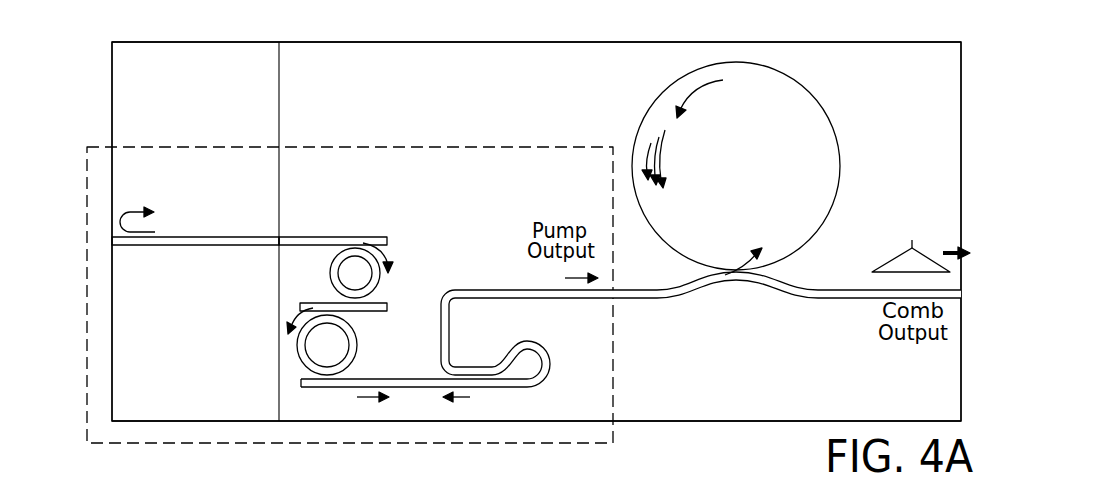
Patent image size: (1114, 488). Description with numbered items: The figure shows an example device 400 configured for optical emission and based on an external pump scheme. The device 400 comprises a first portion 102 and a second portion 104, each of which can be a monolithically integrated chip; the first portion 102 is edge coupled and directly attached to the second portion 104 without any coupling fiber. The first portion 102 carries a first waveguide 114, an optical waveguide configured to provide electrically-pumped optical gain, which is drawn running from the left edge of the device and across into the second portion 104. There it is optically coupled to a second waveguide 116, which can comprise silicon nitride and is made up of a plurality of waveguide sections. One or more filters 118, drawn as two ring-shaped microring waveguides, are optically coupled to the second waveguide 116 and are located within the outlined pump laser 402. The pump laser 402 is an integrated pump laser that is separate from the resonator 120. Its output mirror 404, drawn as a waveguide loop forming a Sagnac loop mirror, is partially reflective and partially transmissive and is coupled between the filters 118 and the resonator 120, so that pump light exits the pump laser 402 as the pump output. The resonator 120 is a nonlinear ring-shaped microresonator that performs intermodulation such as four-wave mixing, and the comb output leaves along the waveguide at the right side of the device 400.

The device 400 is at (999, 58).
The first portion 102 is at (212, 77).
The second portion 104 is at (376, 77).
The pump laser 402 is at (538, 181).
The first waveguide 114 is at (250, 236).
The second waveguide 116 is at (322, 236).
The filters 118 is at (330, 284).
The resonator 120 is at (833, 125).
The mirror 404 is at (537, 379).